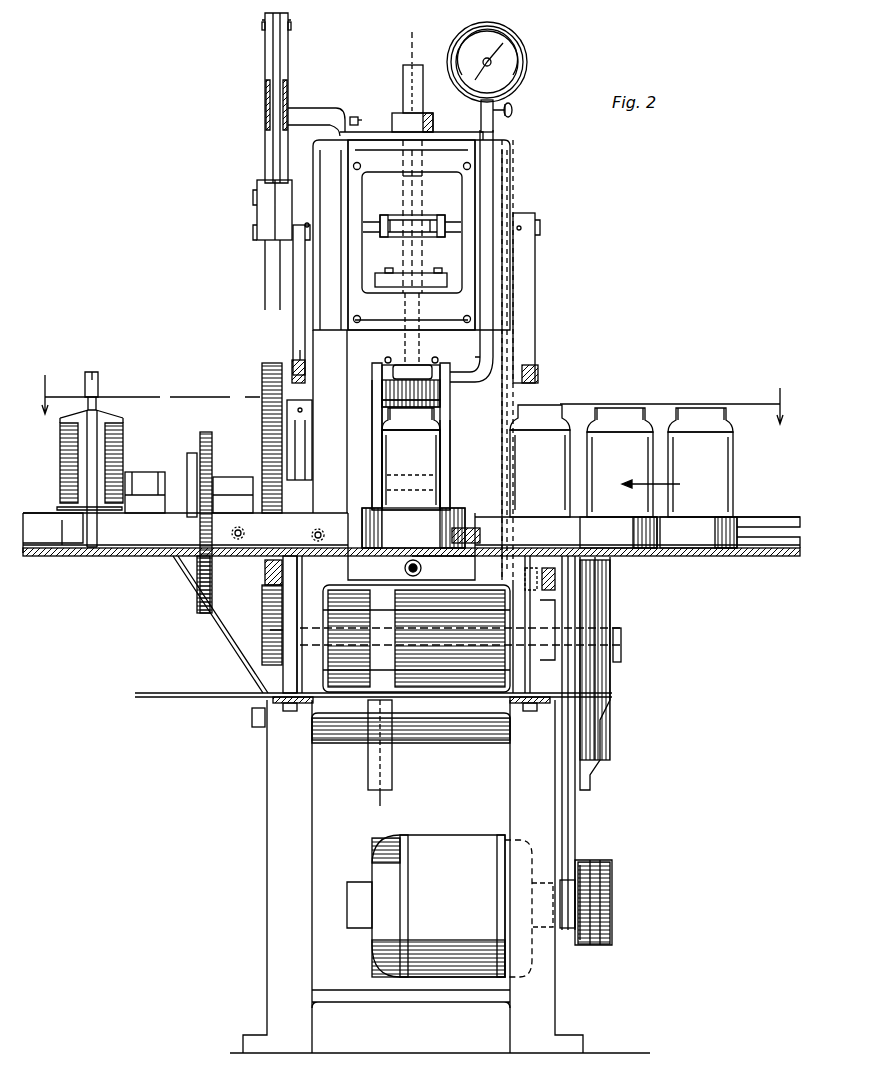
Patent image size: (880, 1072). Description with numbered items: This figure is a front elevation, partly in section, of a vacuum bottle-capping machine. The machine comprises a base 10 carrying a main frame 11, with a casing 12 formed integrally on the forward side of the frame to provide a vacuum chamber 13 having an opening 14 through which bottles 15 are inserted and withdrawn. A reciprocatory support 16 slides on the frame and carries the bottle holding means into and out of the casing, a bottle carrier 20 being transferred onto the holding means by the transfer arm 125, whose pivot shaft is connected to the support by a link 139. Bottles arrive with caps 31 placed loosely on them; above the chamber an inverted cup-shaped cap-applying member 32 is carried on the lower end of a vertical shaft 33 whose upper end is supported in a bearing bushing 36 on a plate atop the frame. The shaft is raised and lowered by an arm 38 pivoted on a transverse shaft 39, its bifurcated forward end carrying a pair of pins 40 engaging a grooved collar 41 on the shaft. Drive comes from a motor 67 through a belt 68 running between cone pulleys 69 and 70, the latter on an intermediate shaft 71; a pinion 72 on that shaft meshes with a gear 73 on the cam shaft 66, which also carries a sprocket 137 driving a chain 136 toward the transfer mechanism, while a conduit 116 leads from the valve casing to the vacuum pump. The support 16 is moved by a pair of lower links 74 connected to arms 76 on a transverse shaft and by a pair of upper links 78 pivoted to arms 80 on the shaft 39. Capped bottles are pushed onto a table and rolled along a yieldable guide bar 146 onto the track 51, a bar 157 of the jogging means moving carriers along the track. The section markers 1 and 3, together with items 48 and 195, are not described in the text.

The section line 1 is at (412, 399).
The section line 3 is at (424, 31).
The base 10 is at (278, 884).
The main frame 11 is at (500, 310).
The casing 12 is at (450, 412).
The vacuum chamber 13 is at (440, 408).
The opening 14 is at (450, 430).
The bottles 15 is at (388, 462).
The reciprocatory support 16 is at (422, 571).
The bottle carrier 20 is at (372, 520).
The caps 31 is at (618, 408).
The cap-applying member 32 is at (425, 375).
The shaft 33 is at (414, 190).
The bearing bushing 36 is at (398, 114).
The arm 38 is at (430, 225).
The shaft 39 is at (372, 218).
The pins 40 is at (408, 228).
The collar 41 is at (428, 230).
The rod 48 is at (403, 181).
The track 51 is at (740, 556).
The cam shaft 66 is at (175, 475).
The motor 67 is at (455, 845).
The belt 68 is at (575, 826).
The cone pulley 69 is at (612, 885).
The cone pulley 70 is at (610, 741).
The intermediate shaft 71 is at (472, 655).
The pinion 72 is at (262, 630).
The gear 73 is at (262, 428).
The lower links 74 is at (262, 580).
The arms 76 is at (295, 455).
The upper links 78 is at (300, 350).
The arms 80 is at (295, 291).
The conduit 116 is at (385, 675).
The transfer arm 125 is at (475, 520).
The chain 136 is at (205, 432).
The sprocket 137 is at (197, 455).
The link 139 is at (393, 570).
The guide bar 146 is at (243, 510).
The bar 157 is at (92, 550).
The block 195 is at (240, 556).